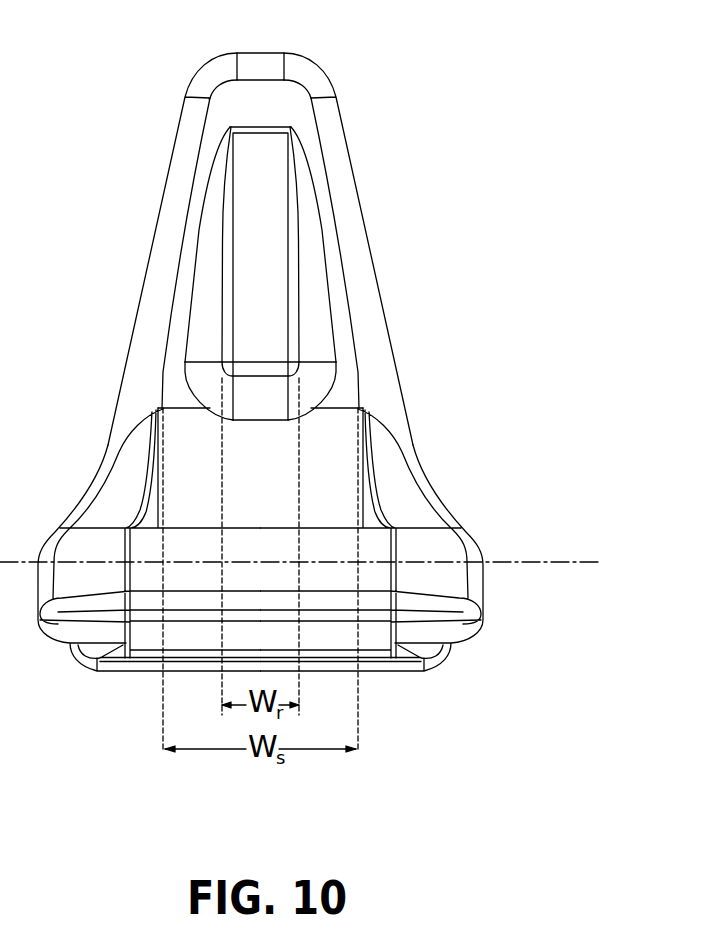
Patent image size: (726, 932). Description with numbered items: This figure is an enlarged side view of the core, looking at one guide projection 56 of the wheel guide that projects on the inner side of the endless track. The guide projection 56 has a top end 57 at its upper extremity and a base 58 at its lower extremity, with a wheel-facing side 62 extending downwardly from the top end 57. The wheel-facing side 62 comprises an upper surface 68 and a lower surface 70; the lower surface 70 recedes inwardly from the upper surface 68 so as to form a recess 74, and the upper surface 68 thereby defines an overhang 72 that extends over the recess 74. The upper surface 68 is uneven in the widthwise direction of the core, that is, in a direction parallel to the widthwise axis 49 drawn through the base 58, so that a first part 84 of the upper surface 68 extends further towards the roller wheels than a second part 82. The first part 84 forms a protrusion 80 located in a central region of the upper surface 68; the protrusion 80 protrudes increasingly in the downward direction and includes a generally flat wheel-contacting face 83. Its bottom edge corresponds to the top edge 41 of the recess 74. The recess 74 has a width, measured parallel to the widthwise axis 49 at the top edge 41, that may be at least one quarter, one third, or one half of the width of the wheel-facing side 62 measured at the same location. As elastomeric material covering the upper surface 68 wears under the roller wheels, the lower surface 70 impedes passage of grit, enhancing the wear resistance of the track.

The guide projection 56 is at (335, 56).
The top end 57 is at (258, 53).
The wheel-facing side 62 is at (235, 103).
The upper surface 68 is at (298, 117).
The protrusion 80 is at (262, 232).
The first part of the upper surface 84 is at (278, 232).
The second part of the upper surface 82 is at (330, 235).
The wheel-contacting face 83 is at (262, 273).
The top edge of the recess 41 is at (180, 333).
The overhang 72 is at (265, 348).
The lower surface 70 is at (265, 385).
The recess 74 is at (262, 408).
The base 58 is at (198, 505).
The widthwise axis 49 is at (578, 562).